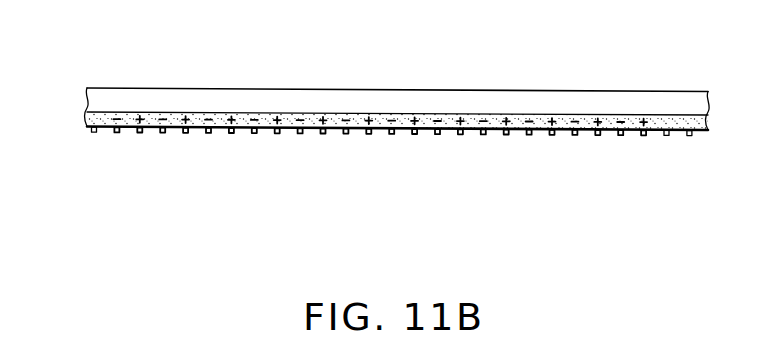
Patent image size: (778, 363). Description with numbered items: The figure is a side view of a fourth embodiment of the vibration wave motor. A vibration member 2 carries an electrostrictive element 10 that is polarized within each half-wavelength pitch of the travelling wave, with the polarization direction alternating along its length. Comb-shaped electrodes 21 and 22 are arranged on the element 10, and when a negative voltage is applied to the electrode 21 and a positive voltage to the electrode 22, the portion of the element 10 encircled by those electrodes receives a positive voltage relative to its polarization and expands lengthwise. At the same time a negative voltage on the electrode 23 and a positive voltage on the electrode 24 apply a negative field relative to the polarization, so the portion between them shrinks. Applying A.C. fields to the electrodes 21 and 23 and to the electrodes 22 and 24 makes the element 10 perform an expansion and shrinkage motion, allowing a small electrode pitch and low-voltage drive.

The vibration member 2 is at (108, 98).
The electrostrictive element 10 is at (86, 117).
The electrode 21 is at (117, 132).
The electrode 22 is at (140, 132).
The electrode 23 is at (300, 133).
The electrode 24 is at (323, 134).